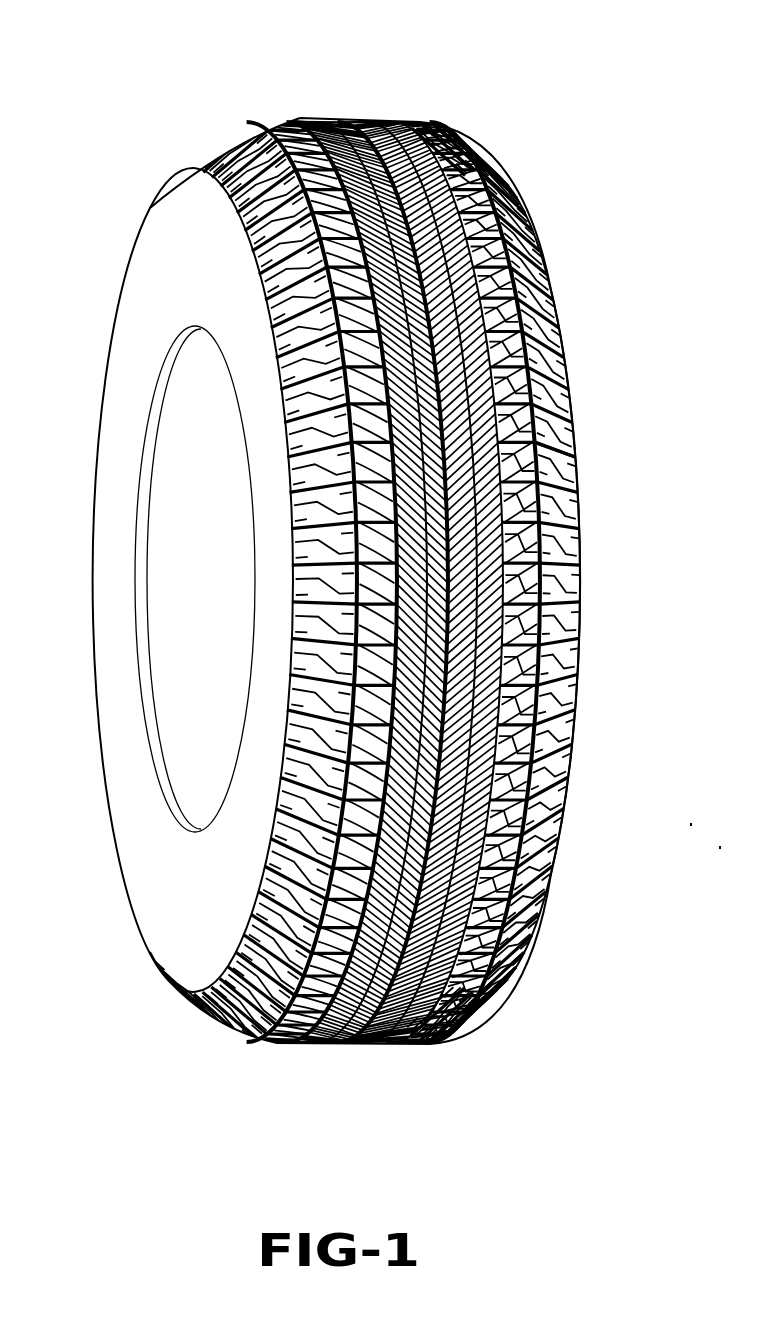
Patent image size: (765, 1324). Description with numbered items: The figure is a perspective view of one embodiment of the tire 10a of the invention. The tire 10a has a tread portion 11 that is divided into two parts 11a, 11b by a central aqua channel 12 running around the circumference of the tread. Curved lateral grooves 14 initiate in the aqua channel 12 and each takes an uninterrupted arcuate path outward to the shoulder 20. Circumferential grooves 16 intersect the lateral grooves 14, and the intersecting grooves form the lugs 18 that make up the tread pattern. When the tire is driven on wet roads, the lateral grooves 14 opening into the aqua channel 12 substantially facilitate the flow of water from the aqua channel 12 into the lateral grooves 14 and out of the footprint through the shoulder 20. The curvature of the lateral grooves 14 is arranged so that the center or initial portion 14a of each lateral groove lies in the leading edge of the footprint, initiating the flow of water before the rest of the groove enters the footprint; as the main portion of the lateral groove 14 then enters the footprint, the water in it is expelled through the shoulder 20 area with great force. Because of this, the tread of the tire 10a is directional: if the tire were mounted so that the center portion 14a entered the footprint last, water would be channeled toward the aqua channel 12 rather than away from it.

The tire 10a is at (144, 1046).
The tread portion 11 is at (328, 98).
The first tread part 11a is at (475, 1015).
The second tread part 11b is at (291, 1046).
The aqua channel 12 is at (377, 1047).
The curved lateral grooves 14 is at (562, 520).
The center or initial portion of lateral groove 14a is at (447, 318).
The circumferential grooves 16 is at (497, 368).
The lugs 18 is at (553, 442).
The shoulder 20 is at (153, 214).